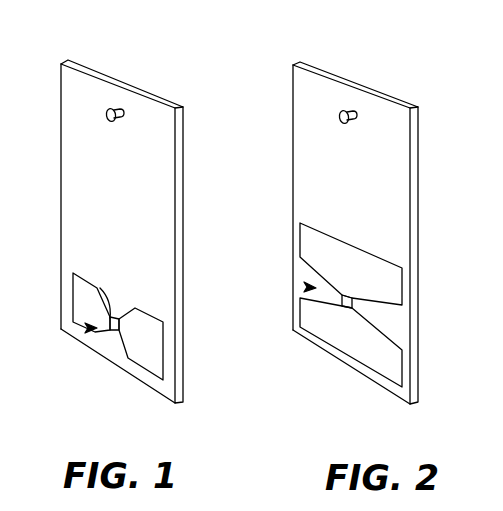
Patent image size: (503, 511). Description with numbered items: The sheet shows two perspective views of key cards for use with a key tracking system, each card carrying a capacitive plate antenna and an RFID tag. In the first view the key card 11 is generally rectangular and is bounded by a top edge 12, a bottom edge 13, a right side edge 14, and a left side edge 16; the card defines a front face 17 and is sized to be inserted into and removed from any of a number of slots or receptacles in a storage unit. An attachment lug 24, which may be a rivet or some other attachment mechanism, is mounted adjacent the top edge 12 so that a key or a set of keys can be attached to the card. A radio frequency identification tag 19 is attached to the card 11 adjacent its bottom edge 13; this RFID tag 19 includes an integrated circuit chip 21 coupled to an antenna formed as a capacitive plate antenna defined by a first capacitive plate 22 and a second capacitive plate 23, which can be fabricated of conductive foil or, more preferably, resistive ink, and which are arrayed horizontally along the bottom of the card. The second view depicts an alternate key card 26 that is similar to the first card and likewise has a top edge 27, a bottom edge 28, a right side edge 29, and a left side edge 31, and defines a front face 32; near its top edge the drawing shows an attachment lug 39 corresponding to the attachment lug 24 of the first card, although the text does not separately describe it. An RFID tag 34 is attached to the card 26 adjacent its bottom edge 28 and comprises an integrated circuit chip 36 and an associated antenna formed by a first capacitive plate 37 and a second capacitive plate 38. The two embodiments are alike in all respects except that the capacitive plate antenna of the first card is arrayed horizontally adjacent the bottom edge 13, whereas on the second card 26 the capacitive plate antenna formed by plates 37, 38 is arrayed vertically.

In FIG. 1, the key card 11 is at (155, 58).
In FIG. 1, the top edge 12 is at (153, 96).
In FIG. 1, the bottom edge 13 is at (145, 388).
In FIG. 1, the right side edge 14 is at (182, 223).
In FIG. 1, the left side edge 16 is at (58, 188).
In FIG. 1, the front face 17 is at (83, 243).
In FIG. 1, the RFID tag 19 is at (85, 330).
In FIG. 1, the integrated circuit chip 21 is at (100, 288).
In FIG. 1, the first capacitive plate 22 is at (87, 307).
In FIG. 1, the second capacitive plate 23 is at (146, 335).
In FIG. 1, the attachment lug 24 is at (108, 112).
In FIG. 2, the key card 26 is at (372, 60).
In FIG. 2, the top edge 27 is at (383, 96).
In FIG. 2, the bottom edge 28 is at (378, 388).
In FIG. 2, the right side edge 29 is at (417, 177).
In FIG. 2, the left side edge 31 is at (293, 218).
In FIG. 2, the front face 32 is at (310, 130).
In FIG. 2, the RFID tag 34 is at (305, 287).
In FIG. 2, the integrated circuit chip 36 is at (343, 308).
In FIG. 2, the first capacitive plate 37 is at (384, 276).
In FIG. 2, the second capacitive plate 38 is at (384, 351).
In FIG. 2, the mounting pin 39 is at (340, 112).